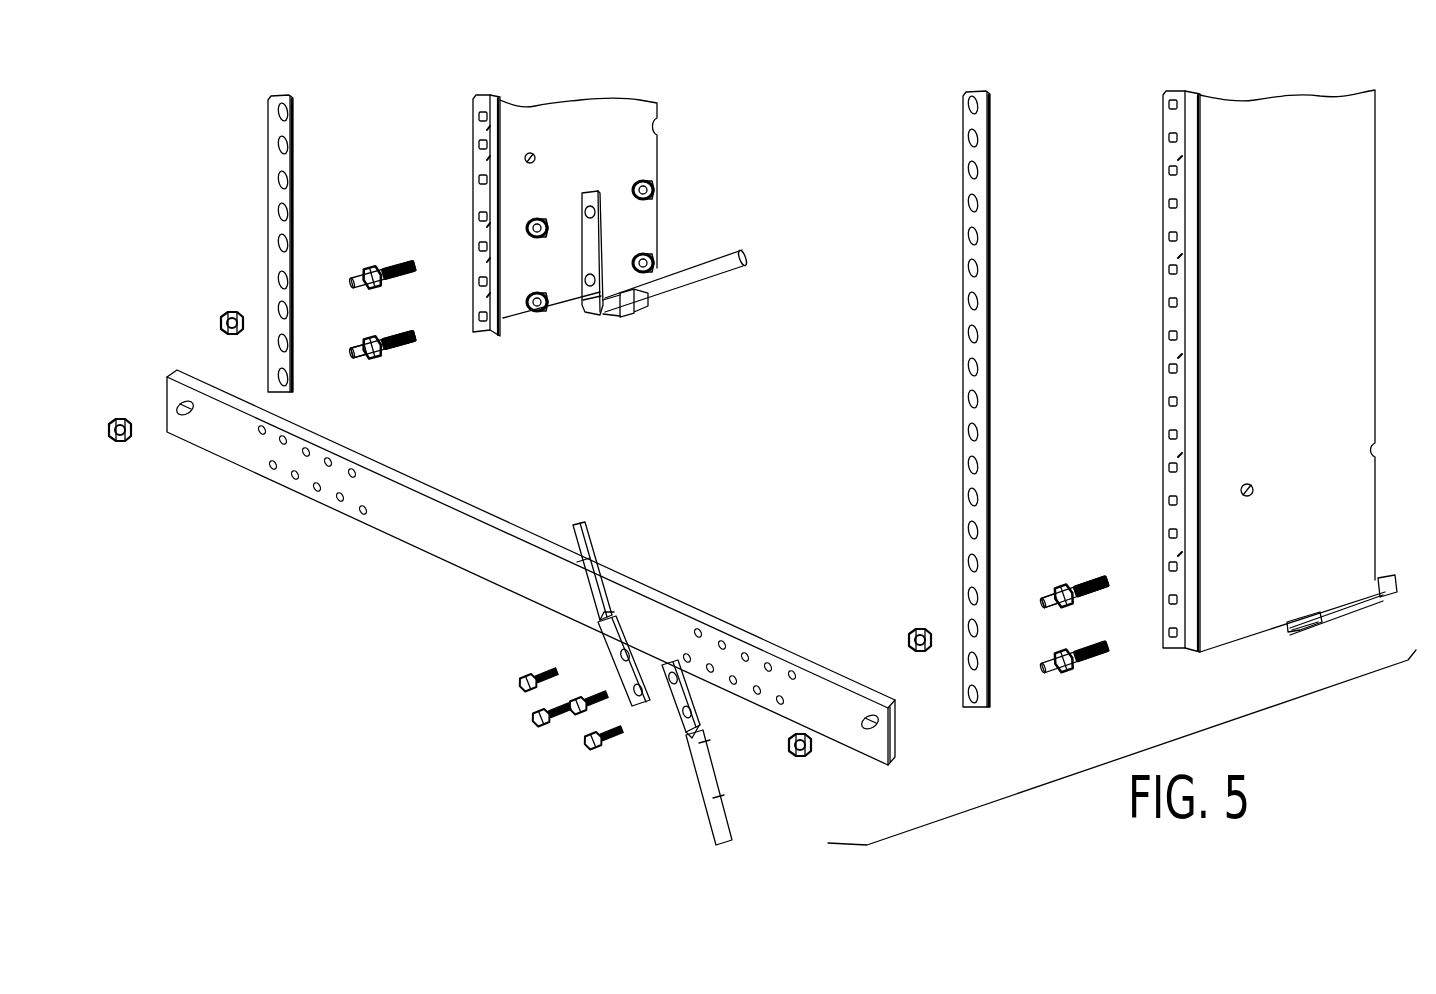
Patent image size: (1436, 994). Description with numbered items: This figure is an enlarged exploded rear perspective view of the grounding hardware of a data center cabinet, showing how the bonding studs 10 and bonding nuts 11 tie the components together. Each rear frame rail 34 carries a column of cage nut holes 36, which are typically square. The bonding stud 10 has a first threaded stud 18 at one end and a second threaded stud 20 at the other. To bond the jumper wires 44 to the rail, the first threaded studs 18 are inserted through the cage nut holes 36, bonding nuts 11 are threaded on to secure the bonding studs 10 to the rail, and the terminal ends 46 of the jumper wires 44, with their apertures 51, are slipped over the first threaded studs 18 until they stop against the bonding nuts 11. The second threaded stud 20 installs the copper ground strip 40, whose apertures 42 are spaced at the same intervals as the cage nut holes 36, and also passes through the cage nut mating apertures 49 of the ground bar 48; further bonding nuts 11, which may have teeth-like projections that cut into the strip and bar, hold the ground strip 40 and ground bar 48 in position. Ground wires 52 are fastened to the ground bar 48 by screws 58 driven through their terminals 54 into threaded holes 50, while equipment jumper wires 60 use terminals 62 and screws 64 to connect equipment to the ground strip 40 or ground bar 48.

The bonding stud 10 is at (377, 268).
The bonding nut 11 is at (652, 182).
The first threaded stud 18 is at (415, 340).
The second threaded stud 20 is at (355, 356).
The rear frame rail 34 is at (612, 122).
The cage nut hole 36 is at (481, 180).
The copper ground strip 40 is at (275, 165).
The aperture 42 is at (282, 243).
The jumper wire 44 is at (742, 268).
The terminal end 46 is at (587, 227).
The ground bar 48 is at (470, 568).
The cage nut mating aperture 49 is at (181, 403).
The threaded hole 50 is at (300, 492).
The aperture 51 is at (587, 290).
The ground wire 52 is at (708, 828).
The terminal 54 is at (682, 700).
The screw 58 is at (590, 745).
The equipment jumper wire 60 is at (577, 540).
The terminal 62 is at (620, 668).
The screw 64 is at (538, 722).